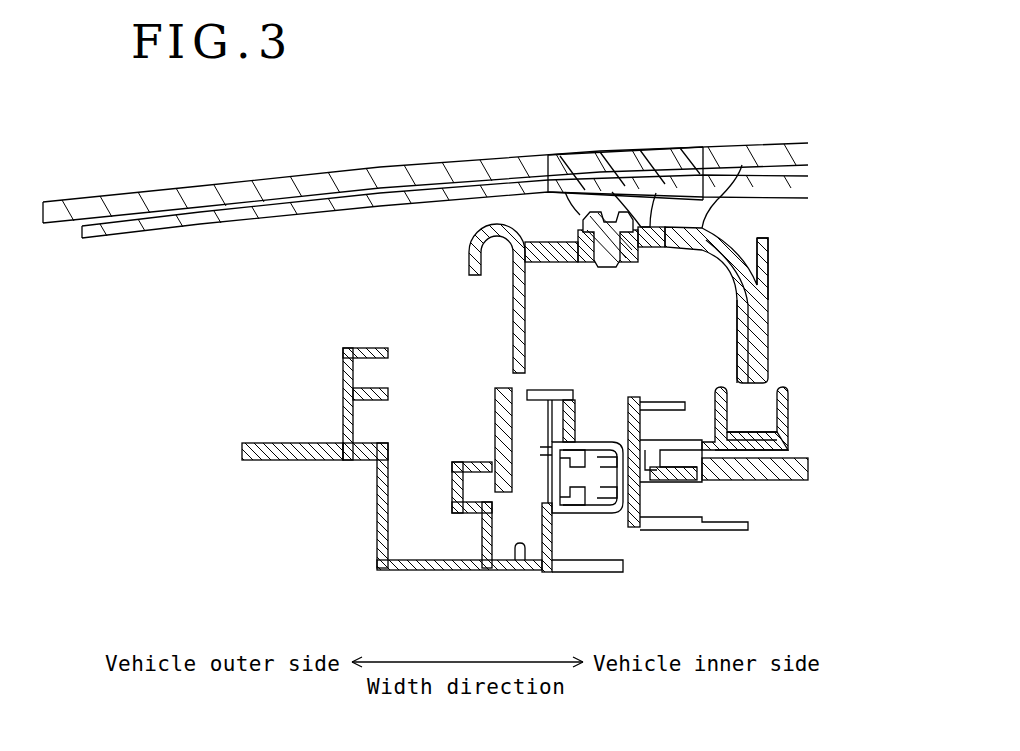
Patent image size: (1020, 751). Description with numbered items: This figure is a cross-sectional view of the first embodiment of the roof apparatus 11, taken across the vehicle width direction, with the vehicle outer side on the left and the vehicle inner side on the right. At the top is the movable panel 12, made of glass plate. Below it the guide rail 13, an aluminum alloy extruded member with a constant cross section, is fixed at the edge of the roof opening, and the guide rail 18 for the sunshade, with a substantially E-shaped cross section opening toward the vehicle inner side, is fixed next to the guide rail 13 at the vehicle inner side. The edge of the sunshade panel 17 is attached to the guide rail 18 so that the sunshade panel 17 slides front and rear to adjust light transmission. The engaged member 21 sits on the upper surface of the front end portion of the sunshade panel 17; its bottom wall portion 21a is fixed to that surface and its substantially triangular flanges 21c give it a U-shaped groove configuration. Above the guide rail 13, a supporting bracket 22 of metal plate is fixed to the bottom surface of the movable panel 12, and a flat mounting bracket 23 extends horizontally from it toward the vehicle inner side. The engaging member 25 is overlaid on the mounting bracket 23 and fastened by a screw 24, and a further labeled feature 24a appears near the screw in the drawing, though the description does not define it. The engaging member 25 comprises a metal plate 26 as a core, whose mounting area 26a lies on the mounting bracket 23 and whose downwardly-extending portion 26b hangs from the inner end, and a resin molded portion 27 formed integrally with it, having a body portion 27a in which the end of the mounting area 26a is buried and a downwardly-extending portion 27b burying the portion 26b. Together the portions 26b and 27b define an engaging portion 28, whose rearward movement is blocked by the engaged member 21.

The roof apparatus 11 is at (425, 164).
The movable panel 12 is at (481, 158).
The guide rail 13 is at (423, 570).
The sunshade panel 17 is at (783, 482).
The guide rail for the sunshade 18 is at (665, 528).
The engaged member 21 is at (748, 412).
The bottom wall portion 21a is at (783, 450).
The flange 21c is at (708, 405).
The supporting bracket 22 is at (513, 333).
The mounting bracket 23 is at (560, 263).
The screw 24 is at (611, 267).
The clip adhesive portion 24a is at (567, 155).
The engaging member 25 is at (769, 252).
The plate 26 is at (625, 169).
The mounting area 26a is at (625, 155).
The downwardly-extending portion 26b is at (750, 335).
The molded portion 27 is at (777, 249).
The body portion 27a is at (742, 165).
The downwardly-extending portion 27b is at (762, 302).
The engaging portion 28 is at (777, 305).